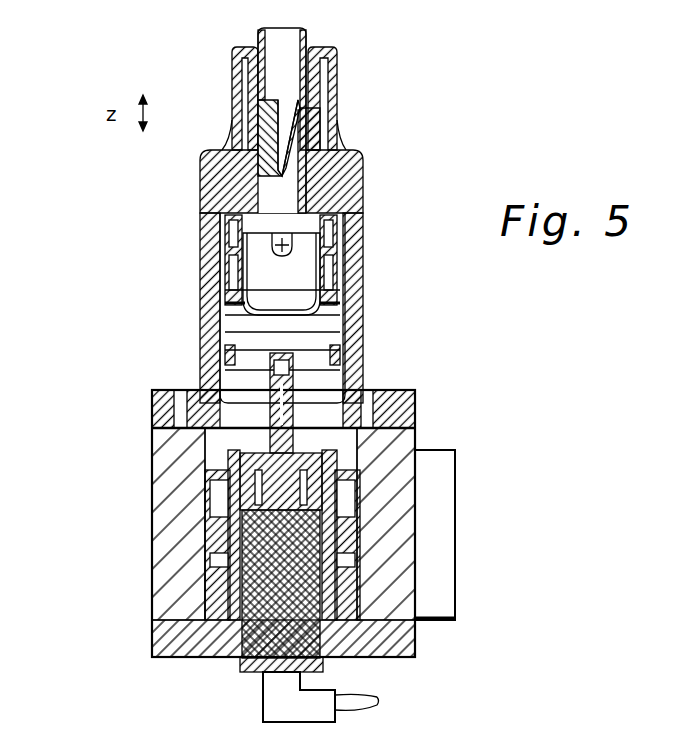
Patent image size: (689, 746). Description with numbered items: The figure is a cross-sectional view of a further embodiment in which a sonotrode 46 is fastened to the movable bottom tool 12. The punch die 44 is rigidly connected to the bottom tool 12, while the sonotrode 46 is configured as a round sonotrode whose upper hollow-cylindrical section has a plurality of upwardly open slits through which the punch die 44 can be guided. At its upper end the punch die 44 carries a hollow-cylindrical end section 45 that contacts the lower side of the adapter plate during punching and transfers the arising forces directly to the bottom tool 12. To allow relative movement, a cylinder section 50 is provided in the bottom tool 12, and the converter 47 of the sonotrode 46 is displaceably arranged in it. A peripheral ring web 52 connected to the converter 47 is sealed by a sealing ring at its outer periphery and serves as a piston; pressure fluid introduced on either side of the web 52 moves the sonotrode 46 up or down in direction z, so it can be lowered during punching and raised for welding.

The bottom tool 12 is at (373, 523).
The punch die 44 is at (342, 192).
The hollow-cylindrical end section 45 is at (282, 58).
The sonotrode 46 is at (308, 336).
The converter 47 is at (205, 557).
The cylinder section 50 is at (416, 458).
The peripheral ring web 52 is at (205, 530).